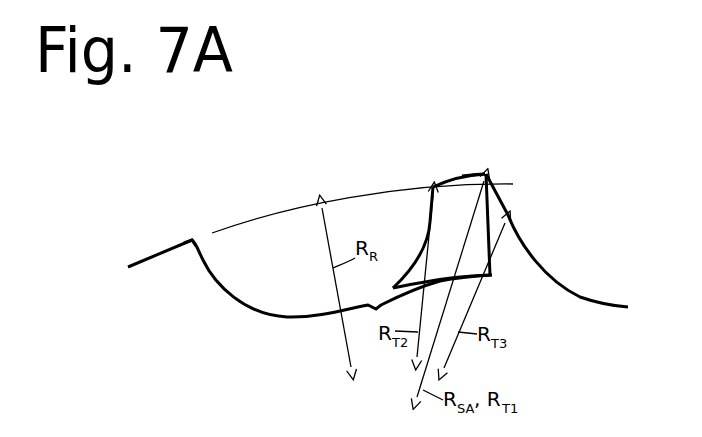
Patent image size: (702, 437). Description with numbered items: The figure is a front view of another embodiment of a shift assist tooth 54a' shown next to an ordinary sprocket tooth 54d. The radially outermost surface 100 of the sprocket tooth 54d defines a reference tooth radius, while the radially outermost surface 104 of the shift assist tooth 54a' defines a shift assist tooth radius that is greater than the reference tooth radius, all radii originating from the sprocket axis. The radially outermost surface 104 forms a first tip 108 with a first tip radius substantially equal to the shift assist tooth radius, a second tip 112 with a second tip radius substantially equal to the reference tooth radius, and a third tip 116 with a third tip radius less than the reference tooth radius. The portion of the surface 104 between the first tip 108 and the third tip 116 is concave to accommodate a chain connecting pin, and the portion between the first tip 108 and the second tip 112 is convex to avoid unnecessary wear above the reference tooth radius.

The radially outermost surface 100 is at (143, 260).
The sprocket tooth 54d is at (177, 216).
The second tip 112 is at (433, 186).
The radially outermost surface 104 is at (462, 172).
The shift assist tooth 54a' is at (486, 134).
The first tip 108 is at (487, 171).
The third tip 116 is at (510, 213).